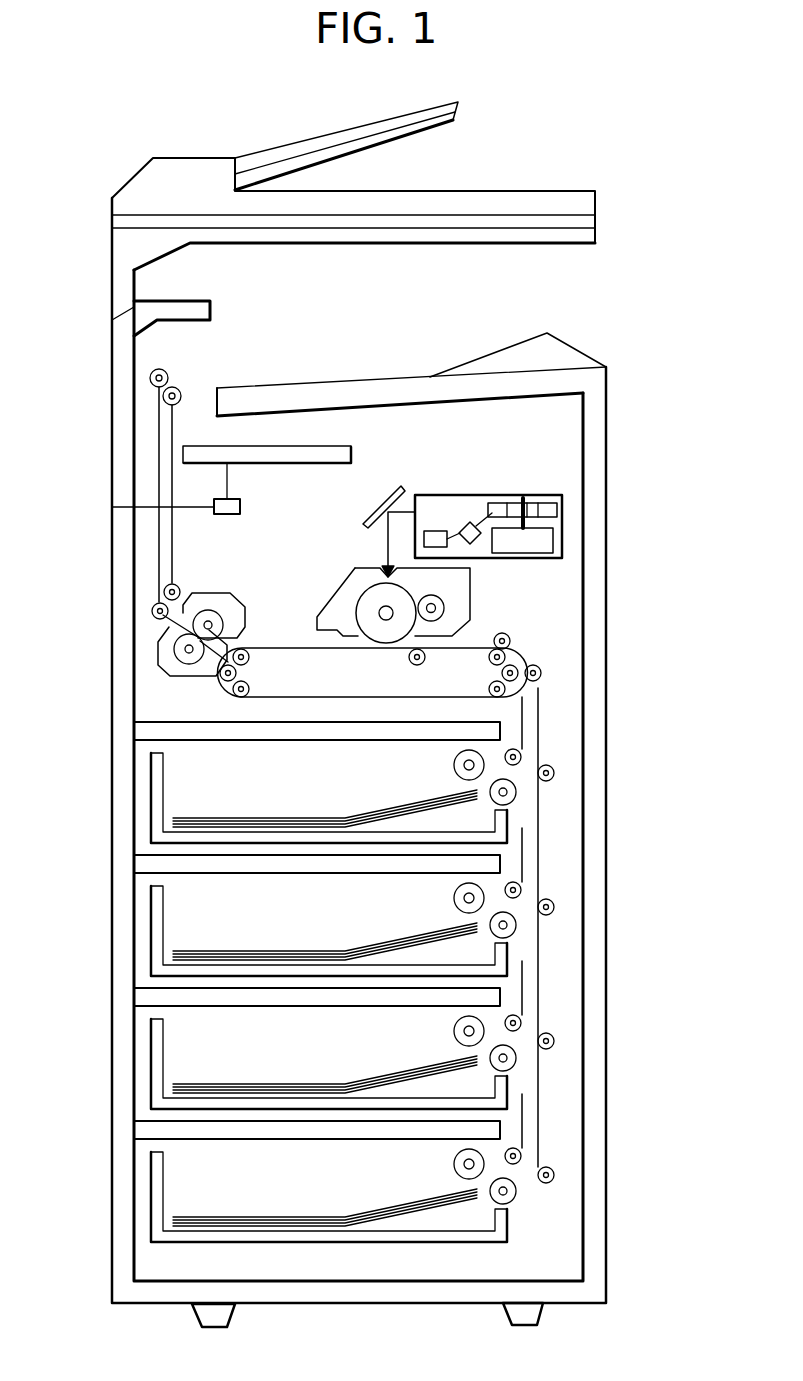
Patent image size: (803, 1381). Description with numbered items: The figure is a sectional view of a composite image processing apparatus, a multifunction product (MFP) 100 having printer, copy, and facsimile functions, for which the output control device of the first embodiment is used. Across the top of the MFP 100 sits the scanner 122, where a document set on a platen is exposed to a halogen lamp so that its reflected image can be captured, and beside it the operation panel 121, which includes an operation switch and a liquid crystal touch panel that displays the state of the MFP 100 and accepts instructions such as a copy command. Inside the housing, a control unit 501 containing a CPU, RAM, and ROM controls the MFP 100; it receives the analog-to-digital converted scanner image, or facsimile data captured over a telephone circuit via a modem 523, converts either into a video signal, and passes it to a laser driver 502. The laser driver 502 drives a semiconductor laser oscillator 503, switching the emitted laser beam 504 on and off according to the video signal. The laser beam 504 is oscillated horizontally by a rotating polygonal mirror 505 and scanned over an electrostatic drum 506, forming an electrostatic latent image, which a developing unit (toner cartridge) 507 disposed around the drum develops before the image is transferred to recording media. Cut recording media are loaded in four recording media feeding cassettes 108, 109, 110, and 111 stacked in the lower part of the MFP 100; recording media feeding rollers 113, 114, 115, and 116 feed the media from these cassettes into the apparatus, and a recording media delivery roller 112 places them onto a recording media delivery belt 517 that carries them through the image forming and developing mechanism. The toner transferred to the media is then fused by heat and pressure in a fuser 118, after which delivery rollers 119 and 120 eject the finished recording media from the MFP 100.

The multifunction product (MFP) 100 is at (606, 487).
The recording media feeding cassette 108 is at (173, 793).
The recording media feeding cassette 109 is at (173, 920).
The recording media feeding cassette 110 is at (173, 1048).
The recording media feeding cassette 111 is at (173, 1175).
The recording media delivery roller 112 is at (541, 673).
The recording media feeding roller 113 is at (554, 773).
The recording media feeding roller 114 is at (554, 907).
The recording media feeding roller 115 is at (554, 1041).
The recording media feeding roller 116 is at (554, 1175).
The fuser 118 is at (158, 657).
The delivery roller 119 is at (152, 611).
The delivery roller 120 is at (168, 372).
The operation panel 121 is at (547, 333).
The scanner 122 is at (597, 205).
The control unit 501 is at (352, 455).
The laser driver 502 is at (429, 531).
The semiconductor laser oscillator 503 is at (476, 541).
The laser beam 504 is at (478, 503).
The rotating polygonal mirror 505 is at (547, 503).
The electrostatic drum 506 is at (357, 597).
The developing unit (toner cartridge) 507 is at (472, 607).
The recording media delivery belt 517 is at (290, 647).
The modem 523 is at (241, 505).